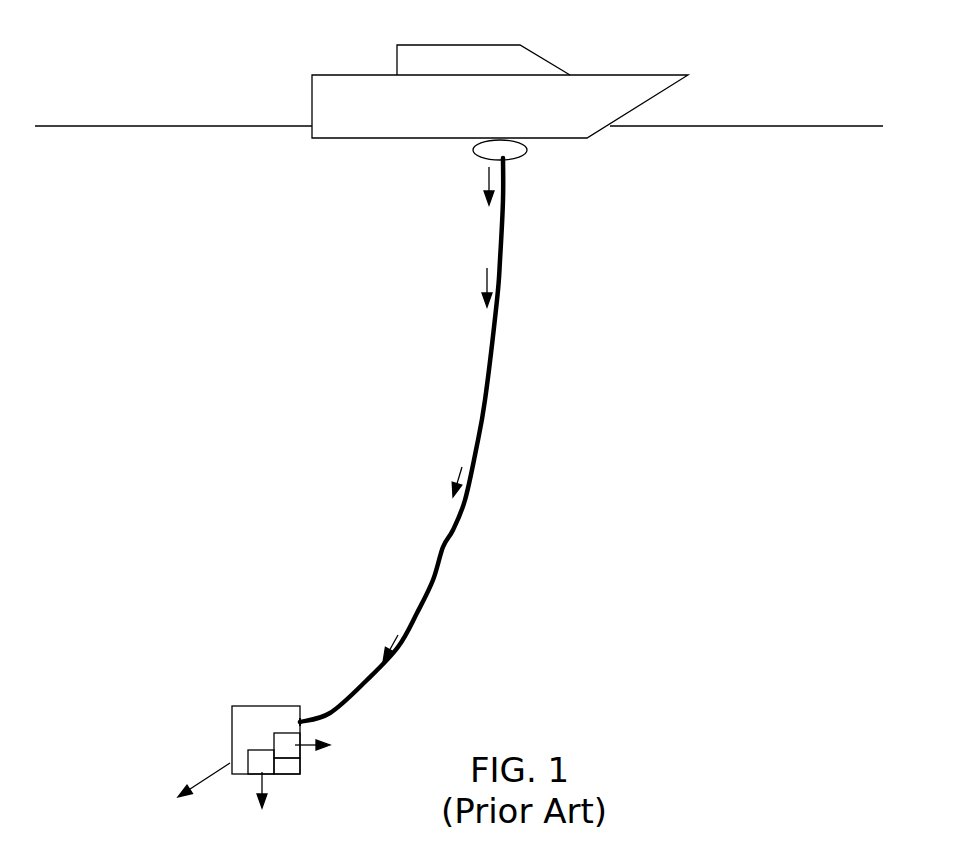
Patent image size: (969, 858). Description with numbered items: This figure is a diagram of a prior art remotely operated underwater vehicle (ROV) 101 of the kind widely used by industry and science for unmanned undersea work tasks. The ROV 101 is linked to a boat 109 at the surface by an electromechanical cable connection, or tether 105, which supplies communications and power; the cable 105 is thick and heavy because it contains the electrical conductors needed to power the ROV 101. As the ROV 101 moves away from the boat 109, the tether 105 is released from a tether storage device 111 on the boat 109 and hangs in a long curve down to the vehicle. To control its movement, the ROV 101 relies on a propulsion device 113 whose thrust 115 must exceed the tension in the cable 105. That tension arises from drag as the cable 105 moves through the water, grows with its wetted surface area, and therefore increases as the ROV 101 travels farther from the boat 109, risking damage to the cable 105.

The remotely operated underwater vehicle 101 is at (230, 740).
The electromechanical cable connection (tether) 105 is at (430, 597).
The boat 109 is at (333, 80).
The tether storage device 111 is at (478, 152).
The propulsion device 113 is at (292, 748).
The thrust 115 is at (313, 713).